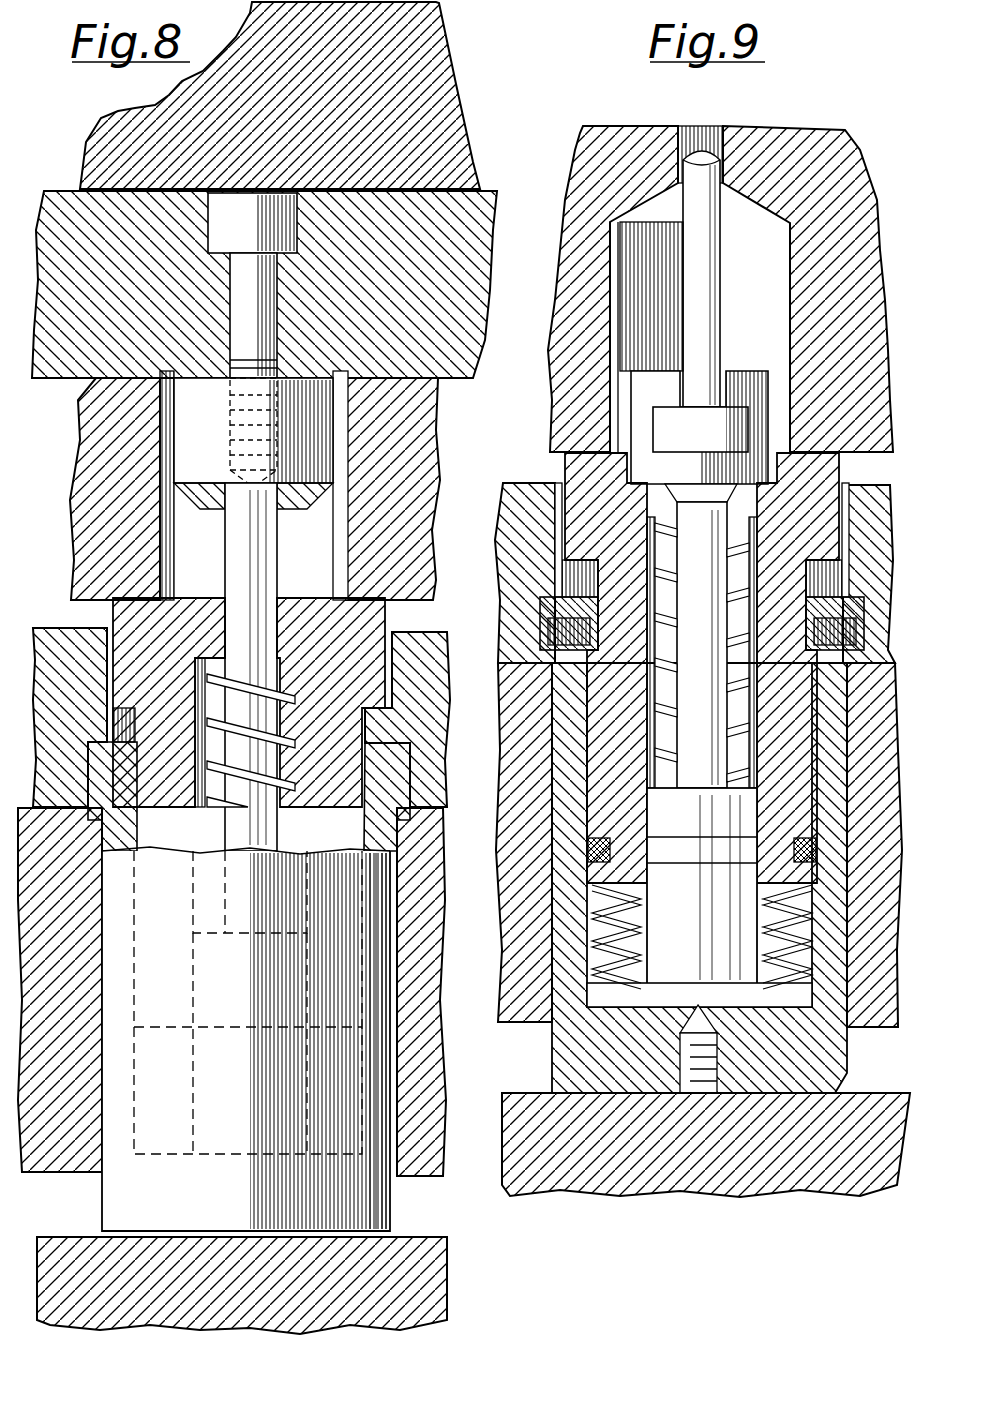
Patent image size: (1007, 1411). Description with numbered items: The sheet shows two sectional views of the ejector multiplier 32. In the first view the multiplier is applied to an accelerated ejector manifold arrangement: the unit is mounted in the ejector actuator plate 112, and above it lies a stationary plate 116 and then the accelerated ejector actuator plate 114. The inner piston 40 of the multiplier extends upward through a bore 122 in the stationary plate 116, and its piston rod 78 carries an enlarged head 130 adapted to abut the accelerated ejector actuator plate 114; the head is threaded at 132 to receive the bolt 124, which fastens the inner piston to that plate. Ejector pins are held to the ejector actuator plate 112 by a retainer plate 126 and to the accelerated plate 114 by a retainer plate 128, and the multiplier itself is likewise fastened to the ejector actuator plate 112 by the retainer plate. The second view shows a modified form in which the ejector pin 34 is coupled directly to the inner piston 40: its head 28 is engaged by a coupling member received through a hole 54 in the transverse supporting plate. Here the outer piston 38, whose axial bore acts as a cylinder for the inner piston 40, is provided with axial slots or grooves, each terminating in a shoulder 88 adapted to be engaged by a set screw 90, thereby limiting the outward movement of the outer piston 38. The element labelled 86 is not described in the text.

In FIG. 8, the retainer plate 128 is at (410, 68).
In FIG. 8, the accelerated ejector actuator plate 114 is at (440, 310).
In FIG. 8, the bolt 124 is at (255, 297).
In FIG. 8, the stationary plate 116 is at (400, 445).
In FIG. 8, the bore 122 is at (337, 520).
In FIG. 8, the enlarged head 130 is at (190, 448).
In FIG. 8, the threaded portion 132 is at (228, 405).
In FIG. 8, the piston rod 78 is at (250, 555).
In FIG. 9, the piston rod 78 is at (712, 712).
In FIG. 8, the retainer plate 126 is at (428, 712).
In FIG. 8, the ejector actuator plate 112 is at (420, 1057).
In FIG. 8, the ejector multiplier 32 is at (398, 1193).
In FIG. 8, the outer piston 38 is at (165, 1005).
In FIG. 9, the outer piston 38 is at (820, 773).
In FIG. 8, the inner piston 40 is at (192, 1118).
In FIG. 9, the inner piston 40 is at (700, 940).
In FIG. 9, the hole 54 is at (790, 240).
In FIG. 9, the ejector pin 34 is at (720, 308).
In FIG. 9, the head 28 is at (708, 440).
In FIG. 9, the collar 86 is at (545, 580).
In FIG. 9, the set screw 90 is at (548, 620).
In FIG. 9, the shoulder 88 is at (553, 663).